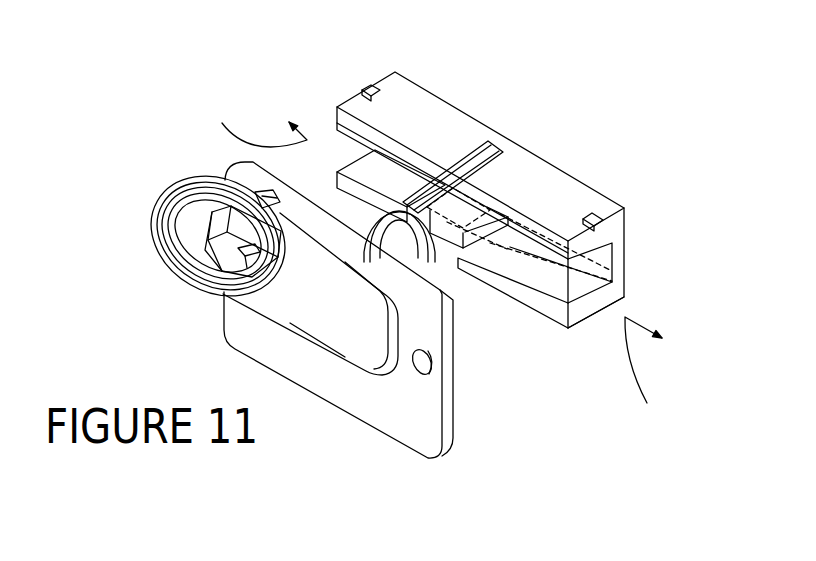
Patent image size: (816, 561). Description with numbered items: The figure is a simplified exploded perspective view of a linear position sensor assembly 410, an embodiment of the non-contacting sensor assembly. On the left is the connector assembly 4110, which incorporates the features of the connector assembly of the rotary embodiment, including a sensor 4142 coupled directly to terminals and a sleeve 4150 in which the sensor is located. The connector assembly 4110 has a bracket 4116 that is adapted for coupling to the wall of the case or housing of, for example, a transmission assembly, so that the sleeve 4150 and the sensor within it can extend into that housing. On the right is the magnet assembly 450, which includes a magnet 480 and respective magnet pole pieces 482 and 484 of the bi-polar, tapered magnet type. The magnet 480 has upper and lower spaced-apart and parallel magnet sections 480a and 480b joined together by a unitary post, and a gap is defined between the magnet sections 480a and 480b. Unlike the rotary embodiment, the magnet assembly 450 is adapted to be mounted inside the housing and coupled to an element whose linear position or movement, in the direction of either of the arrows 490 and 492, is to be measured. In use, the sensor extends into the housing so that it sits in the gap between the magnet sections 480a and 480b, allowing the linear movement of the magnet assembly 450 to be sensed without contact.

The linear position sensor assembly 410 is at (180, 125).
The arrow 490 is at (251, 119).
The arrow 492 is at (651, 377).
The magnet assembly 450 is at (433, 90).
The magnet 480 is at (633, 240).
The upper magnet section 480a is at (620, 208).
The lower magnet section 480b is at (581, 311).
The magnet pole piece 482 is at (465, 127).
The magnet pole piece 484 is at (625, 298).
The connector assembly 4110 is at (163, 184).
The bracket 4116 is at (397, 420).
The sensor 4142 is at (480, 252).
The sleeve 4150 is at (458, 243).